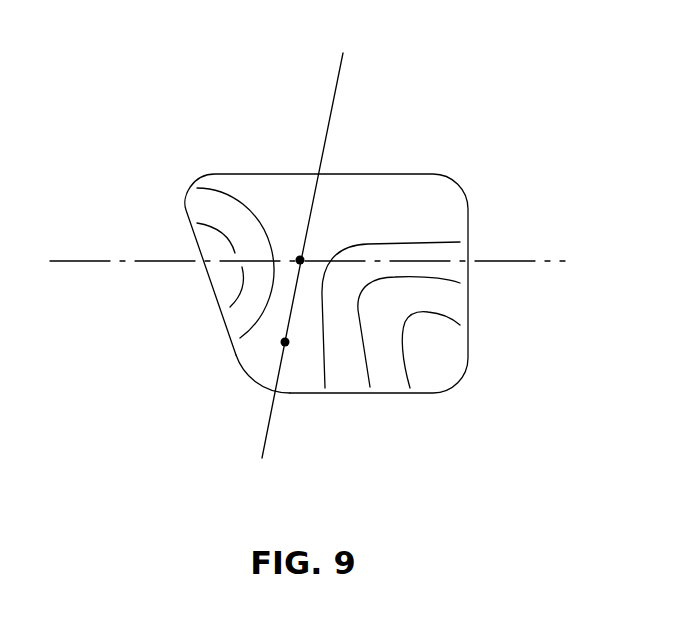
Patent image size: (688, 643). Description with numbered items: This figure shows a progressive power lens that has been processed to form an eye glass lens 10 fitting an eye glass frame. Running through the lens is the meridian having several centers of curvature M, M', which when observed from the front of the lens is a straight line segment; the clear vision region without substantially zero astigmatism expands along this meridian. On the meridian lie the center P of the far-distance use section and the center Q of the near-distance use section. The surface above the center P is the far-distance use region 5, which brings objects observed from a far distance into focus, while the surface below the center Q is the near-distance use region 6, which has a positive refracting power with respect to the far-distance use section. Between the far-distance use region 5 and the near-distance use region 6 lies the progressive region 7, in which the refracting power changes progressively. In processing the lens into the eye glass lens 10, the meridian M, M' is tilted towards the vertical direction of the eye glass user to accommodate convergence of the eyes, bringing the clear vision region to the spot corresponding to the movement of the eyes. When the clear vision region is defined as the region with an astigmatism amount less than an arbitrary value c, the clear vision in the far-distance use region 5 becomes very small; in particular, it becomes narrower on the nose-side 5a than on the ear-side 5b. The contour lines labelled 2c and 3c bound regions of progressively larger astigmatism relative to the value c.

The eye glass lens 10 is at (473, 168).
The far-distance use region 5 is at (292, 206).
The nose-side 5a is at (230, 186).
The ear-side 5b is at (457, 210).
The near-distance use region 6 is at (266, 362).
The progressive region 7 is at (281, 289).
The arbitrary value of astigmatism amount c is at (351, 307).
The second contour curve 2c is at (342, 327).
The third contour curve 3c is at (453, 350).
The center of the far-distance use section P is at (302, 259).
The center of the near-distance use section Q is at (288, 341).
The meridian having several centers of curvature M is at (326, 143).
The meridian having several centers of curvature M' is at (271, 376).